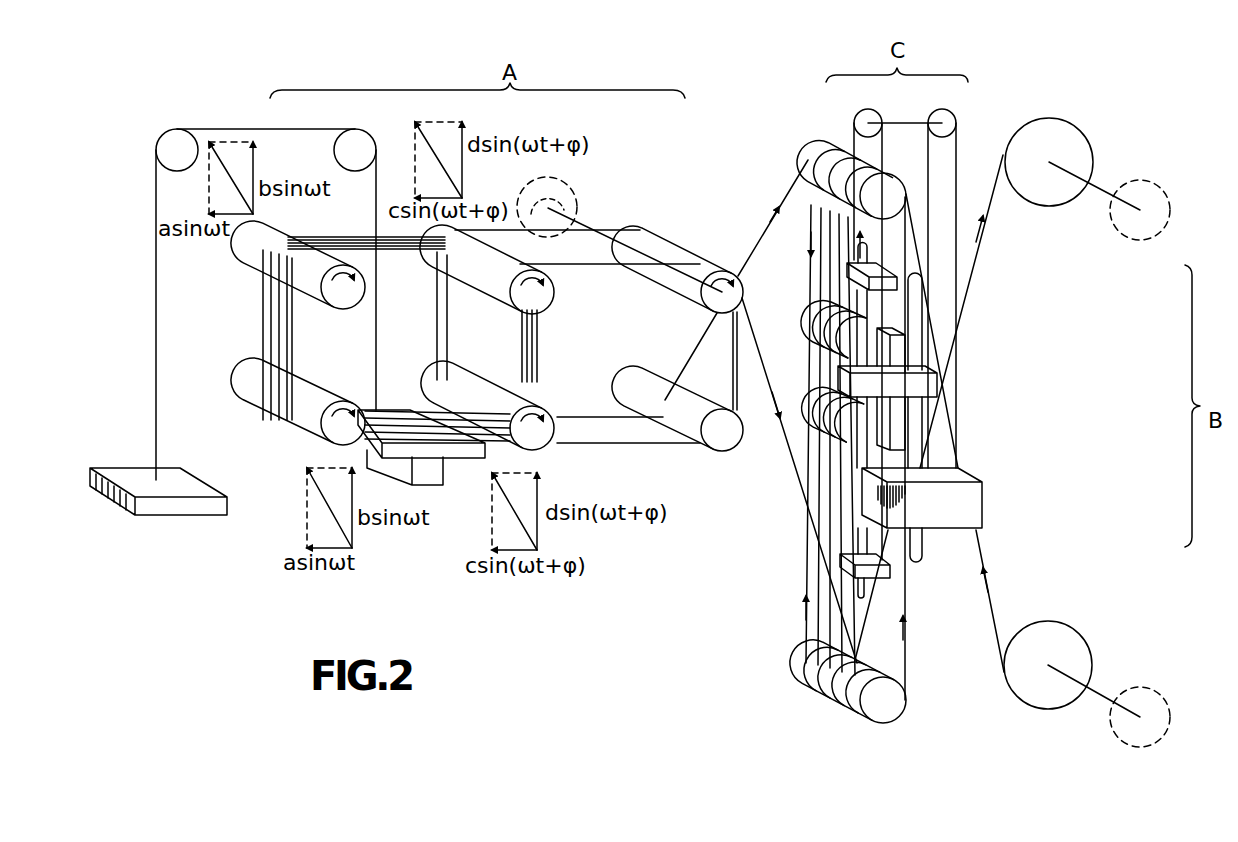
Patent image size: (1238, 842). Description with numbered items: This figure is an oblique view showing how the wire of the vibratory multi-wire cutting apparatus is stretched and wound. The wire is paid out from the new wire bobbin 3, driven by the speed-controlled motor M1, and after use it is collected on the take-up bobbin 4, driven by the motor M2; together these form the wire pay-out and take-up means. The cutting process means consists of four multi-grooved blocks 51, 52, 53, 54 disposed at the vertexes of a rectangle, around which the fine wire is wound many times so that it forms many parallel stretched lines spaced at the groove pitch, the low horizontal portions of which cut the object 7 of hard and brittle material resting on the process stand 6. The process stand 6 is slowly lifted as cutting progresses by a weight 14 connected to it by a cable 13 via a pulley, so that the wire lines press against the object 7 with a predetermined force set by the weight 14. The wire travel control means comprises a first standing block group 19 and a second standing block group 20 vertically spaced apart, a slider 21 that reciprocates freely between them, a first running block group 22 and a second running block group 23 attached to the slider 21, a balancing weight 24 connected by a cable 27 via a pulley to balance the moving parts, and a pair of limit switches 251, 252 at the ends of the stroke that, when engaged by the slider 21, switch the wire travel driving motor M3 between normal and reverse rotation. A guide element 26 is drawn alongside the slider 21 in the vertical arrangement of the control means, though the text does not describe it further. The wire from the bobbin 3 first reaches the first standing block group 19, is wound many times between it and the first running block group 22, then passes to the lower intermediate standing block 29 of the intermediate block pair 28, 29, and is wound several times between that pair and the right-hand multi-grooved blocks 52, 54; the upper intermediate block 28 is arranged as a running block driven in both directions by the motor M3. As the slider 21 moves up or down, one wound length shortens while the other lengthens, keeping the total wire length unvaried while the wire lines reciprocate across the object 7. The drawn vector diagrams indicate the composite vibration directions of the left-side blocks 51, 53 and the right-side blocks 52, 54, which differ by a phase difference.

The new wire bobbin 3 is at (1072, 633).
The take-up bobbin 4 is at (1080, 137).
The multi-grooved block 51 is at (354, 405).
The multi-grooved block 52 is at (542, 442).
The multi-grooved block 53 is at (336, 300).
The multi-grooved block 54 is at (546, 302).
The process stand 6 is at (443, 482).
The object 7 is at (456, 454).
The cable 13 is at (218, 130).
The weight 14 is at (190, 506).
The first standing block group 19 is at (816, 162).
The second standing block group 20 is at (806, 664).
The slider 21 is at (940, 380).
The first running block group 22 is at (814, 318).
The second running block group 23 is at (824, 404).
The balancing weight 24 is at (978, 502).
The limit switch 251 is at (905, 283).
The limit switch 252 is at (890, 580).
The guide rod 26 is at (846, 332).
The cable 27 is at (880, 165).
The intermediate standing block 28 is at (716, 270).
The intermediate standing block 29 is at (718, 452).
The motor M1 is at (1143, 688).
The motor M2 is at (1142, 181).
The wire travel driving motor M3 is at (566, 190).